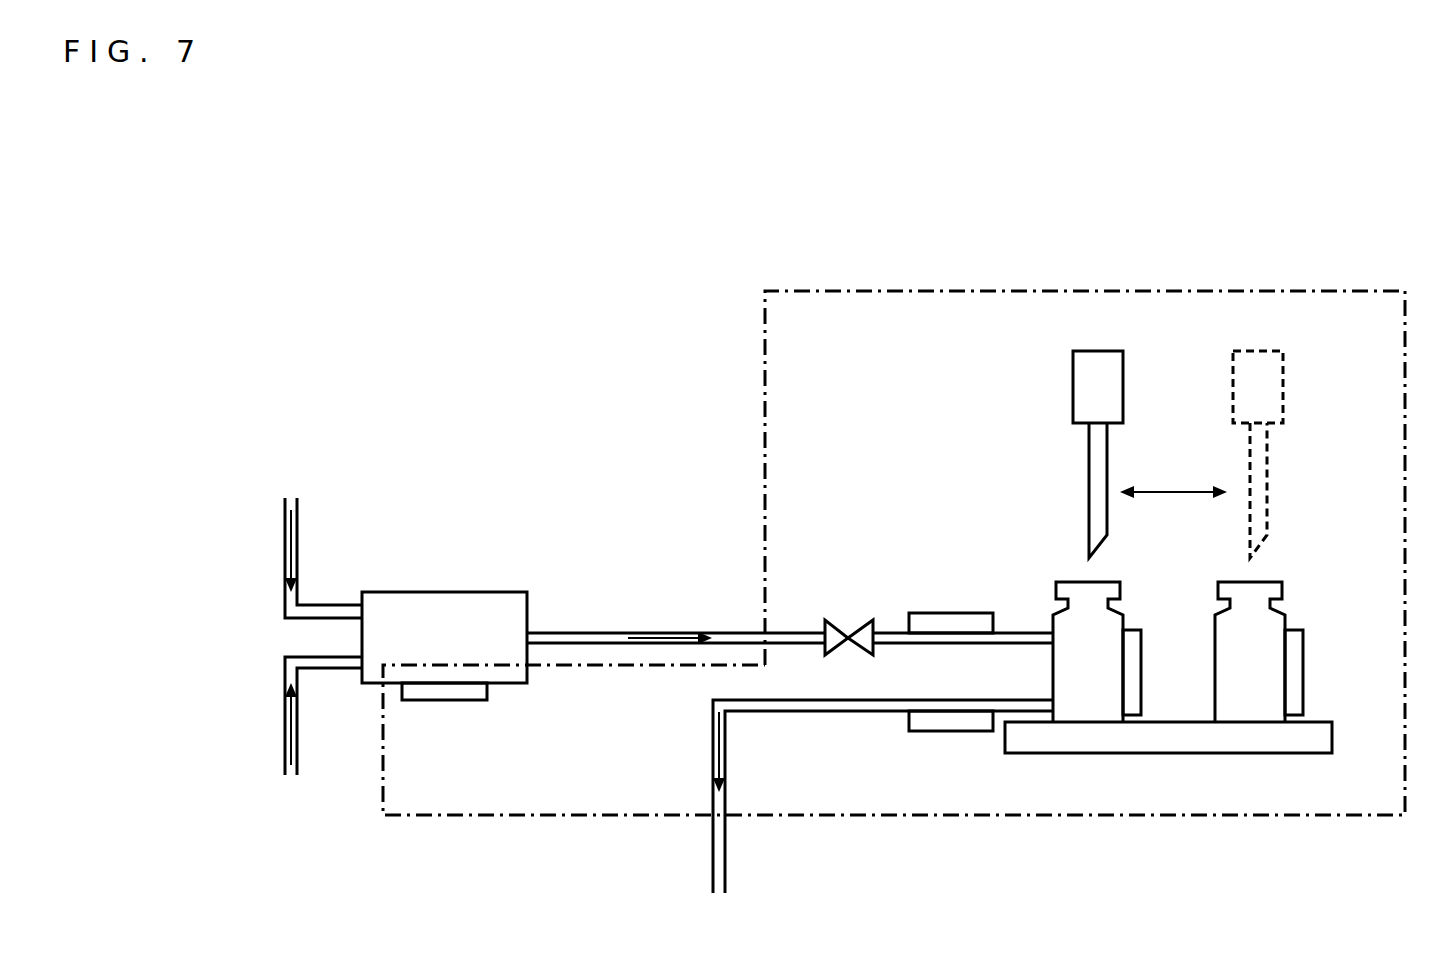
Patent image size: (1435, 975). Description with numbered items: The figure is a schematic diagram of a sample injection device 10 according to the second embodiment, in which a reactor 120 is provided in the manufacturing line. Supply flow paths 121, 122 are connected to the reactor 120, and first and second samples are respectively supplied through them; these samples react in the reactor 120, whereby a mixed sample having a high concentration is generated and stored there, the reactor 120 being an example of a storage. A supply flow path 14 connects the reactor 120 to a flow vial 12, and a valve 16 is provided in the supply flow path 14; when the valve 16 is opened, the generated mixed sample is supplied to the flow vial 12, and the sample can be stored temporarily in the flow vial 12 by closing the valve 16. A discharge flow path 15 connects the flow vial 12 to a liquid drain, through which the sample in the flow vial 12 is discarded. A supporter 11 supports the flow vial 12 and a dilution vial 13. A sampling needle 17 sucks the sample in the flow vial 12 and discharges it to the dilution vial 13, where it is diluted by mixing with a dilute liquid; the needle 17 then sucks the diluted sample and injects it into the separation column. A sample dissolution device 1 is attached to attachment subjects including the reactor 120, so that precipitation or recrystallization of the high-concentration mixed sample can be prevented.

The sample dissolution device 1 is at (443, 700).
The sample injection device 10 is at (1085, 291).
The supporter 11 is at (1332, 738).
The flow vial 12 is at (1088, 582).
The dilution vial 13 is at (1250, 582).
The supply flow path 14 is at (796, 628).
The discharge flow path 15 is at (862, 712).
The valve 16 is at (835, 622).
The sampling needle 17 is at (1097, 351).
The reactor 120 is at (443, 592).
The supply flow path 121 is at (283, 558).
The supply flow path 122 is at (283, 713).